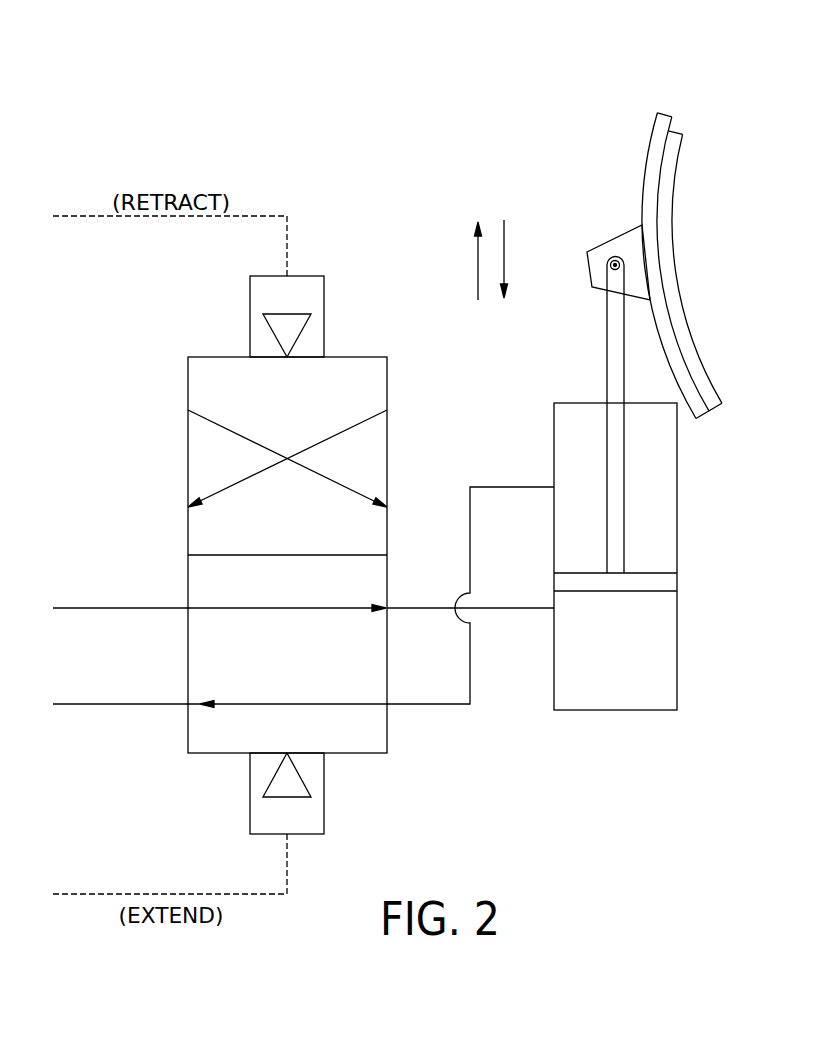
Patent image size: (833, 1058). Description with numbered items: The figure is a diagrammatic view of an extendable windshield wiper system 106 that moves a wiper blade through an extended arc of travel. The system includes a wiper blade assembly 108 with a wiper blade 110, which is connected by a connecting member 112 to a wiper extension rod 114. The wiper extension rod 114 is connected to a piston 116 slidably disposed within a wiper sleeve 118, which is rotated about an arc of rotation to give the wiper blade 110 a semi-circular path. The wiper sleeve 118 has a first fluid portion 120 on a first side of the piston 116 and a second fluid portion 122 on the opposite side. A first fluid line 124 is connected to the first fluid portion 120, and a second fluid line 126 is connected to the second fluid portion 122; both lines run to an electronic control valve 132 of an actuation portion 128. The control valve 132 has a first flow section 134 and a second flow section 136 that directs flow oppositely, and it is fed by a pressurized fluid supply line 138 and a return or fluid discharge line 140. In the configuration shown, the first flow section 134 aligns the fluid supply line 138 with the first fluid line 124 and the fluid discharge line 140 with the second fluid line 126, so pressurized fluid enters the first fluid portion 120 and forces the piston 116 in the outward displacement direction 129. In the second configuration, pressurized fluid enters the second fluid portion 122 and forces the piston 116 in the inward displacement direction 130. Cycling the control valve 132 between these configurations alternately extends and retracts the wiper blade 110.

The extendable windshield wiper system 106 is at (750, 69).
The wiper blade assembly 108 is at (715, 171).
The wiper blade 110 is at (672, 192).
The connecting member 112 is at (630, 246).
The wiper extension rod 114 is at (614, 348).
The piston 116 is at (668, 583).
The wiper sleeve 118 is at (678, 688).
The first fluid portion 120 is at (666, 622).
The second fluid portion 122 is at (664, 503).
The first fluid line 124 is at (487, 610).
The second fluid line 126 is at (425, 706).
The actuation portion 128 is at (446, 457).
The outward displacement direction 129 is at (504, 250).
The inward displacement direction 130 is at (478, 270).
The electronic control valve 132 is at (387, 380).
The first flow section 134 is at (368, 578).
The second flow section 136 is at (206, 428).
The pressurized fluid supply line 138 is at (138, 606).
The fluid discharge line 140 is at (138, 702).